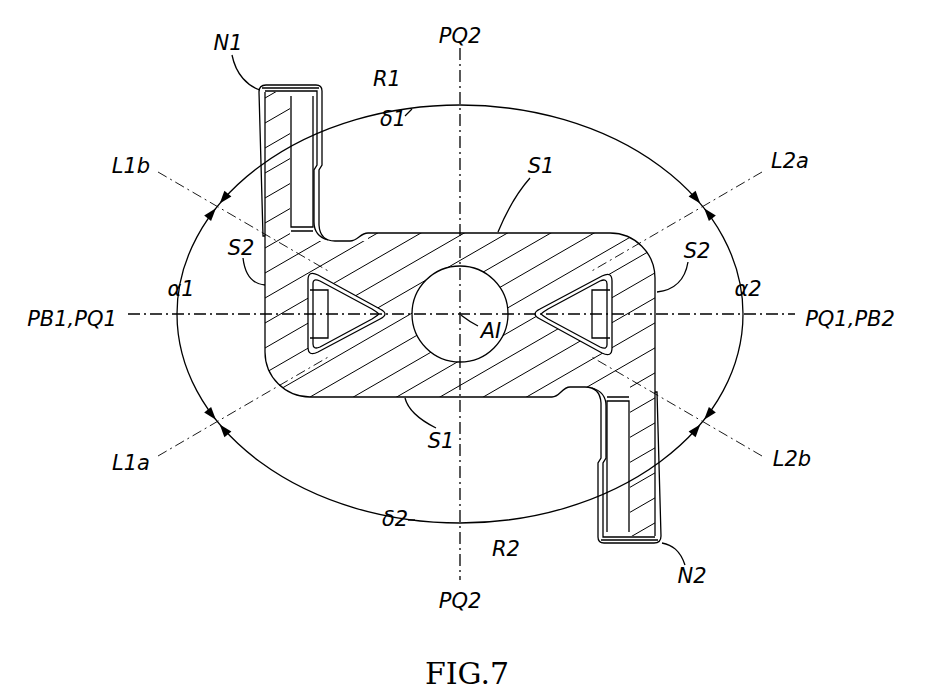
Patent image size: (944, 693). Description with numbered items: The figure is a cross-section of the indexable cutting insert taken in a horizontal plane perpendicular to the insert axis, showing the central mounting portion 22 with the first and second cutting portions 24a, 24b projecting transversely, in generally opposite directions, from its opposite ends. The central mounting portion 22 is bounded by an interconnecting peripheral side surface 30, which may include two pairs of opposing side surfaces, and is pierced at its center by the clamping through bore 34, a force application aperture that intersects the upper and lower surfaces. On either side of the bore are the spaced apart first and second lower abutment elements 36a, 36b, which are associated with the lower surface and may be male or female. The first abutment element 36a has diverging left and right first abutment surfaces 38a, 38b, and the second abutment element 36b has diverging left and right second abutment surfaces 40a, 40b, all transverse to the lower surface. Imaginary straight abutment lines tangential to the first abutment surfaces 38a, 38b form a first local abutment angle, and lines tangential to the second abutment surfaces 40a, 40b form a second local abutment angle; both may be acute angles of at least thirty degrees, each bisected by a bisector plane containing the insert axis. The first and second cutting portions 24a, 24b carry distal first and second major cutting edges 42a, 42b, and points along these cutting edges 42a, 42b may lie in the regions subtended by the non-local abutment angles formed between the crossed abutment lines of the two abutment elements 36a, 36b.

The central mounting portion 22 is at (487, 402).
The first cutting portion 24a is at (256, 124).
The second cutting portion 24b is at (670, 495).
The peripheral side surface 30 is at (438, 230).
The clamping through bore 34 is at (453, 309).
The first lower abutment element 36a is at (326, 321).
The second lower abutment element 36b is at (585, 321).
The left first abutment surface 38a is at (348, 357).
The right first abutment surface 38b is at (355, 278).
The left second abutment surface 40a is at (560, 286).
The right second abutment surface 40b is at (560, 352).
The first major cutting edge 42a is at (296, 85).
The second major cutting edge 42b is at (634, 546).